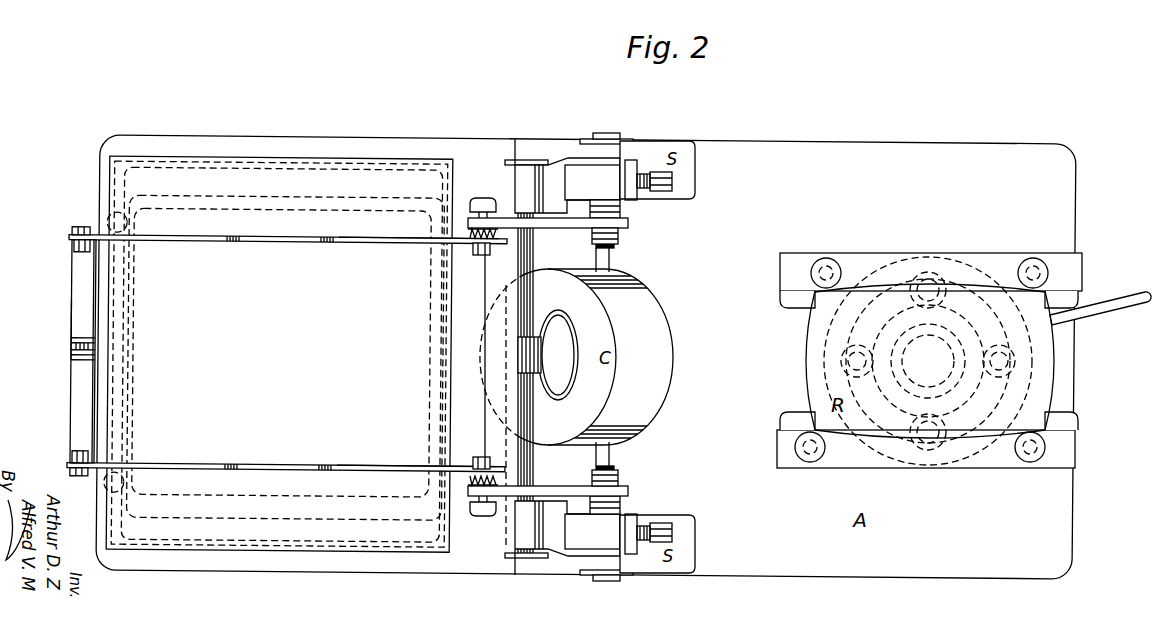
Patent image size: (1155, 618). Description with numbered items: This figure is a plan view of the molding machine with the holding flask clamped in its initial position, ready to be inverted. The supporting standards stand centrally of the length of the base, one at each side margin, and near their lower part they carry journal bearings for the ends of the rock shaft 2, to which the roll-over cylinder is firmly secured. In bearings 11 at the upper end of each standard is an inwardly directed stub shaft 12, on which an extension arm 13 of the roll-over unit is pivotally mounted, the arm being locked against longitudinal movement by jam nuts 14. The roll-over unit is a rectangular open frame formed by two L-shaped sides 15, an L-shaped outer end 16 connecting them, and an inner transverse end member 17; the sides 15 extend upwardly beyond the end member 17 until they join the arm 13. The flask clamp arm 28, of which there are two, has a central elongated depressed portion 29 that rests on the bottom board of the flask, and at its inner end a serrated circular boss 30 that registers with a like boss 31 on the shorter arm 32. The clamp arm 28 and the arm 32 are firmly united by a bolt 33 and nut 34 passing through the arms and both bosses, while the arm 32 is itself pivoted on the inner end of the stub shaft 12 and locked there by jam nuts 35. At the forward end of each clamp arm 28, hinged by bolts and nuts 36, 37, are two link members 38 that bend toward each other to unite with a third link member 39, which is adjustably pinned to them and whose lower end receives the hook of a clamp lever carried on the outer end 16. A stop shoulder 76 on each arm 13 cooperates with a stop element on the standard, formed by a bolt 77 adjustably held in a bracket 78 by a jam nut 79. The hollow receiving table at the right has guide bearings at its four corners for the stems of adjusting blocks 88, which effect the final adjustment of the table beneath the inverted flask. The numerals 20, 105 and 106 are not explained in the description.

The rock shaft 2 is at (595, 258).
The bearings 11 is at (628, 140).
The stub shaft 12 is at (606, 133).
The extension arm 13 is at (602, 184).
The jam nuts 14 is at (622, 208).
The L-shaped sides 15 is at (306, 166).
The outer end 16 is at (100, 377).
The inner transverse end member 17 is at (520, 382).
The pivot 20 is at (108, 216).
The flask clamp arm 28 is at (390, 241).
The depressed portion 29 is at (279, 235).
The circular boss 30 is at (470, 239).
The boss 31 is at (468, 228).
The shorter arm 32 is at (557, 229).
The bolt 33 is at (482, 198).
The nut 34 is at (480, 256).
The jam nuts 35 is at (620, 235).
The bolts 36 is at (78, 252).
The nuts 37 is at (73, 231).
The link members 38 is at (80, 305).
The third link member 39 is at (72, 348).
The stop shoulder 76 is at (545, 176).
The bolt 77 is at (678, 193).
The bracket 78 is at (646, 170).
The jam nut 79 is at (676, 181).
The adjusting blocks 88 is at (827, 258).
The bolt hole 105 is at (929, 272).
The bolt hole 106 is at (841, 362).